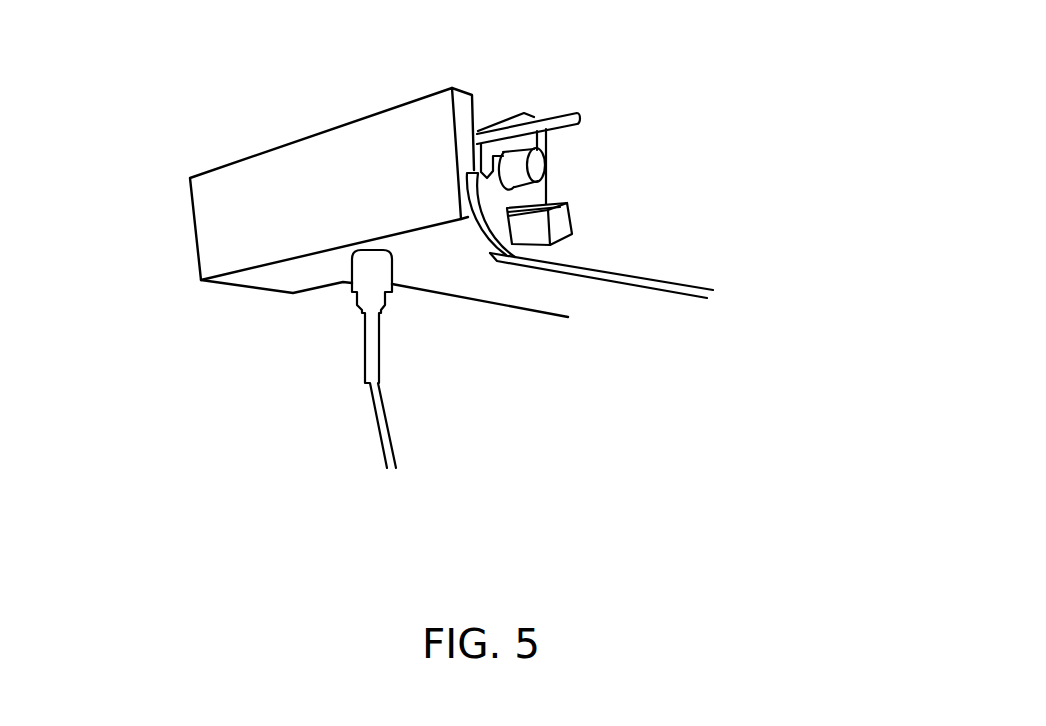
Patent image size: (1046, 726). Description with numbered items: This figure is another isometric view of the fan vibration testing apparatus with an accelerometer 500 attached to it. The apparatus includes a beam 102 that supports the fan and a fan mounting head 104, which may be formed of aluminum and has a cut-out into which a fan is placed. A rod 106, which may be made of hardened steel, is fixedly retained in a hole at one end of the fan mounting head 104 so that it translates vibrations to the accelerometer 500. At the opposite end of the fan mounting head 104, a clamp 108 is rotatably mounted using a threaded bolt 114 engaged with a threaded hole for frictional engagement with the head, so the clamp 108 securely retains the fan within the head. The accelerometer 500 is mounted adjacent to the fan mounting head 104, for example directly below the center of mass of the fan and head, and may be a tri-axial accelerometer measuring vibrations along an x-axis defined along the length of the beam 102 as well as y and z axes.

The fan mounting head 104 is at (226, 206).
The rod 106 is at (567, 105).
The threaded bolt 114 is at (556, 159).
The clamp 108 is at (488, 232).
The beam 102 is at (619, 283).
The accelerometer 500 is at (328, 313).